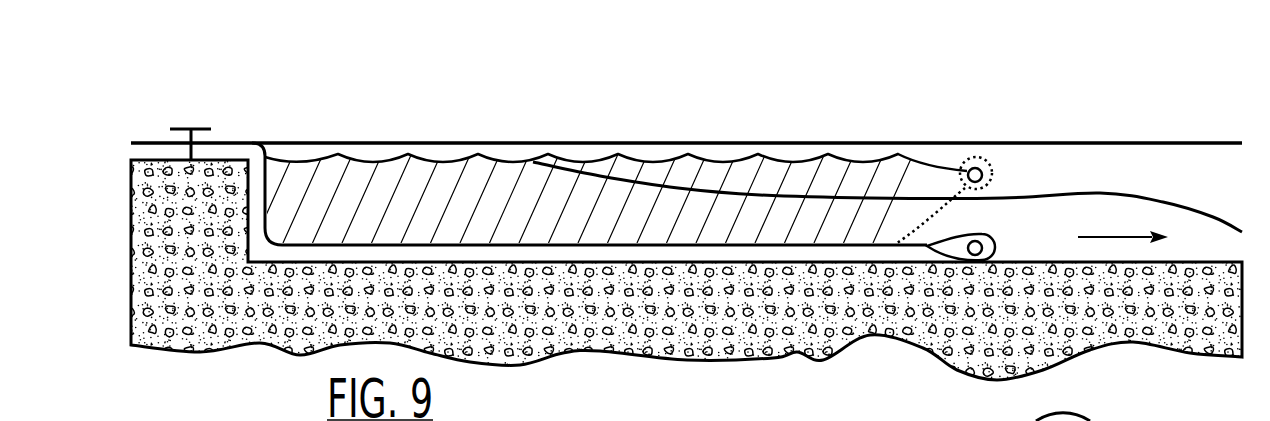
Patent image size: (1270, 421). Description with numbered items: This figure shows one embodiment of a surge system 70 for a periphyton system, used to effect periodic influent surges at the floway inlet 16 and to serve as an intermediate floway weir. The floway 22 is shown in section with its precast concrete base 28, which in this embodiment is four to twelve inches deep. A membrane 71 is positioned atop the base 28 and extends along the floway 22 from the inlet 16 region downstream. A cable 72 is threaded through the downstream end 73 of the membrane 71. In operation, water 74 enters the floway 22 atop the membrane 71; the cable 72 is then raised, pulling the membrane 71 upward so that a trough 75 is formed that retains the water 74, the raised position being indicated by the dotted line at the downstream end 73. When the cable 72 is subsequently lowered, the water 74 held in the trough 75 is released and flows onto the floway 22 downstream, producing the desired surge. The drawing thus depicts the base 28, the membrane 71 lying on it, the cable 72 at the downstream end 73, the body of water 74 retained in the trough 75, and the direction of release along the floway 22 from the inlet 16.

The floway 22 is at (194, 72).
The floway inlet 16 is at (233, 158).
The precast concrete base 28 is at (729, 334).
The surge system 70 is at (122, 252).
The membrane 71 is at (550, 244).
The cable 72 is at (978, 240).
The downstream end 73 is at (989, 156).
The water 74 is at (358, 216).
The trough 75 is at (497, 187).